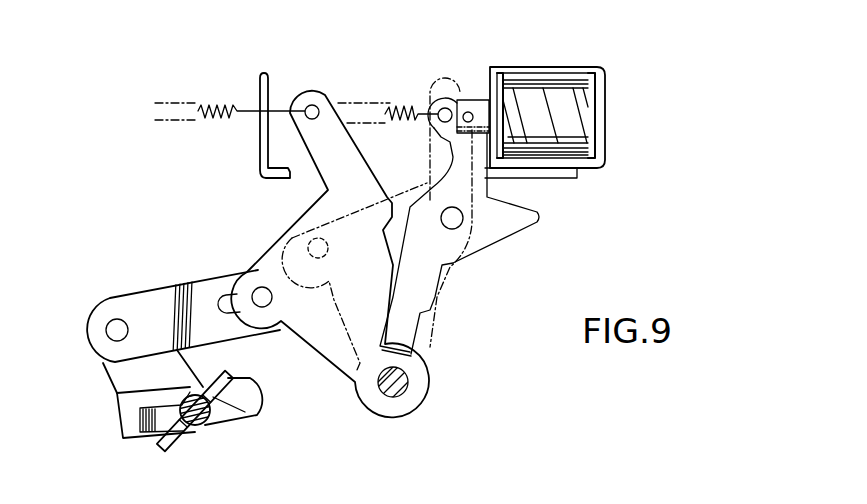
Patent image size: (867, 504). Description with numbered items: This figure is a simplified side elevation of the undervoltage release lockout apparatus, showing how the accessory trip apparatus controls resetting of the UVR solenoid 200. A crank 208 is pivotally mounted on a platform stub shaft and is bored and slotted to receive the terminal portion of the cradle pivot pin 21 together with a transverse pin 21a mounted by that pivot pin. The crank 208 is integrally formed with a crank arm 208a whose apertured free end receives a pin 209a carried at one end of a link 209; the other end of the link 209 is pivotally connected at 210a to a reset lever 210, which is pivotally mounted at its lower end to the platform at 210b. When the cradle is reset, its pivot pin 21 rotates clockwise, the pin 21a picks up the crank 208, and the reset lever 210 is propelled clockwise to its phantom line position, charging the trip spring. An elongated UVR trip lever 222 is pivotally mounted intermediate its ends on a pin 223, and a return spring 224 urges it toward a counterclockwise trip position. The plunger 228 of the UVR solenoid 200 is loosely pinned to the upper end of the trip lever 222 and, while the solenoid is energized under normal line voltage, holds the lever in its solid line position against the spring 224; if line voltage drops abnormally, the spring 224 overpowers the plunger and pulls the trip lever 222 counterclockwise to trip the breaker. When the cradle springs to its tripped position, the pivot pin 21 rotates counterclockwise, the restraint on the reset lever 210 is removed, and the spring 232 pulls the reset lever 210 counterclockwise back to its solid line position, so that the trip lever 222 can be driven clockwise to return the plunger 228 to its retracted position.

The UVR solenoid 200 is at (558, 95).
The crank 208 is at (253, 420).
The crank arm 208a is at (120, 373).
The link 209 is at (157, 295).
The pin 209a is at (107, 332).
The reset lever 210 is at (372, 290).
The pivotal connection 210a is at (262, 287).
The pivotal mounting 210b is at (405, 386).
The cradle pivot pin 21 is at (207, 427).
The transverse pin 21a is at (160, 443).
The UVR trip lever 222 is at (430, 283).
The pin 223 is at (452, 223).
The return spring 224 is at (390, 103).
The plunger 228 is at (478, 100).
The spring 232 is at (212, 103).